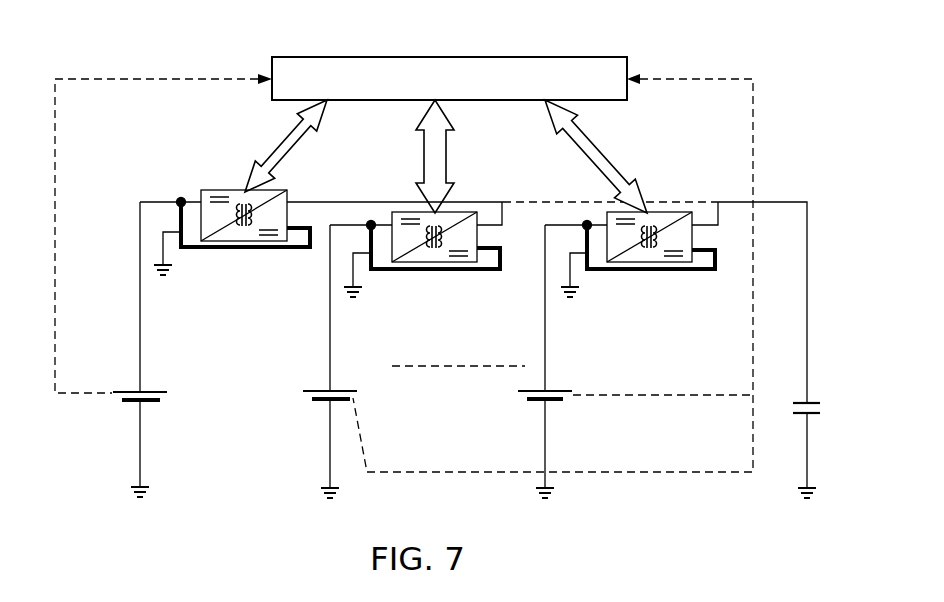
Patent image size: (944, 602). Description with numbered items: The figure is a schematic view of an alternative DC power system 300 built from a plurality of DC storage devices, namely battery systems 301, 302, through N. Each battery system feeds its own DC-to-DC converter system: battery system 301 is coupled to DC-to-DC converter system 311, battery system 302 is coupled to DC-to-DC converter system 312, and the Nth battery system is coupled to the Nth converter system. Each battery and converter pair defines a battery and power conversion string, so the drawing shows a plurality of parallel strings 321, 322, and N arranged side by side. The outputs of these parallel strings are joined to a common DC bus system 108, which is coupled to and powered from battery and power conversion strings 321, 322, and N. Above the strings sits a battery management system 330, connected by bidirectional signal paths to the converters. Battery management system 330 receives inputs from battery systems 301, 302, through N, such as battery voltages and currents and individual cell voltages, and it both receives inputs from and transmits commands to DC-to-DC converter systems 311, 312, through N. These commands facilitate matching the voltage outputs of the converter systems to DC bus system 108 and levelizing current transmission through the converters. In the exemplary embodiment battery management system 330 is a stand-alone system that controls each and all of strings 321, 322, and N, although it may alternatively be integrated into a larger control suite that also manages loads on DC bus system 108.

The DC power system 300 is at (245, 55).
The battery management system 330 is at (459, 56).
The battery and power conversion string 321 is at (172, 182).
The battery and power conversion string 322 is at (313, 333).
The DC-to-DC converter system 311 is at (236, 258).
The DC-to-DC converter system 312 is at (401, 280).
The battery system 301 is at (128, 405).
The battery system 302 is at (318, 403).
The Nth battery system, converter system, and string N is at (634, 280).
The DC bus system 108 is at (812, 443).